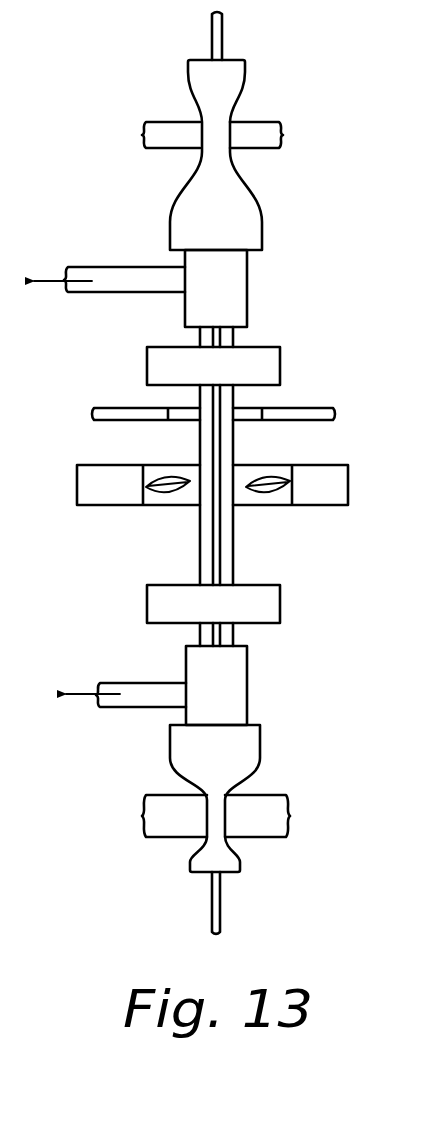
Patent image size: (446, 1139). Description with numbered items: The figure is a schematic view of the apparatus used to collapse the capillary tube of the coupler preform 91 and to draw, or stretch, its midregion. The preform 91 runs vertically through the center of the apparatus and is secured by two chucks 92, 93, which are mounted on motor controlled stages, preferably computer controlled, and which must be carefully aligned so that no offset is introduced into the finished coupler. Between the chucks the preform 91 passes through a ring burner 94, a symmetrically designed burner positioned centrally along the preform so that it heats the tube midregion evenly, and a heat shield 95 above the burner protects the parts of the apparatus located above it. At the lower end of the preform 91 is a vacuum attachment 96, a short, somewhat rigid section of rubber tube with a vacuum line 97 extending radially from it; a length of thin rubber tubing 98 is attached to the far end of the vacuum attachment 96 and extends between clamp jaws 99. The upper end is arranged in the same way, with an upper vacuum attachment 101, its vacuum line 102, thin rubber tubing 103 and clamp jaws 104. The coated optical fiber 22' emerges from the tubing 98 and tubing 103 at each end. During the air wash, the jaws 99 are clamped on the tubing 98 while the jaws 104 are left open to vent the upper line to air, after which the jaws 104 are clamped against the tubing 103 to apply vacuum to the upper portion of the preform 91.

The coated optical fiber 22' is at (249, 473).
The tubing 103 is at (240, 210).
The clamp jaws 104 is at (141, 132).
The upper vacuum attachment 101 is at (247, 289).
The vacuum line 102 is at (100, 267).
The coupler preform 91 is at (236, 543).
The chuck 92 is at (280, 368).
The heat shield 95 is at (304, 408).
The ring burner 94 is at (304, 465).
The chuck 93 is at (280, 607).
The vacuum attachment 96 is at (238, 679).
The vacuum line 97 is at (120, 708).
The tubing 98 is at (250, 741).
The clamp jaws 99 is at (291, 815).